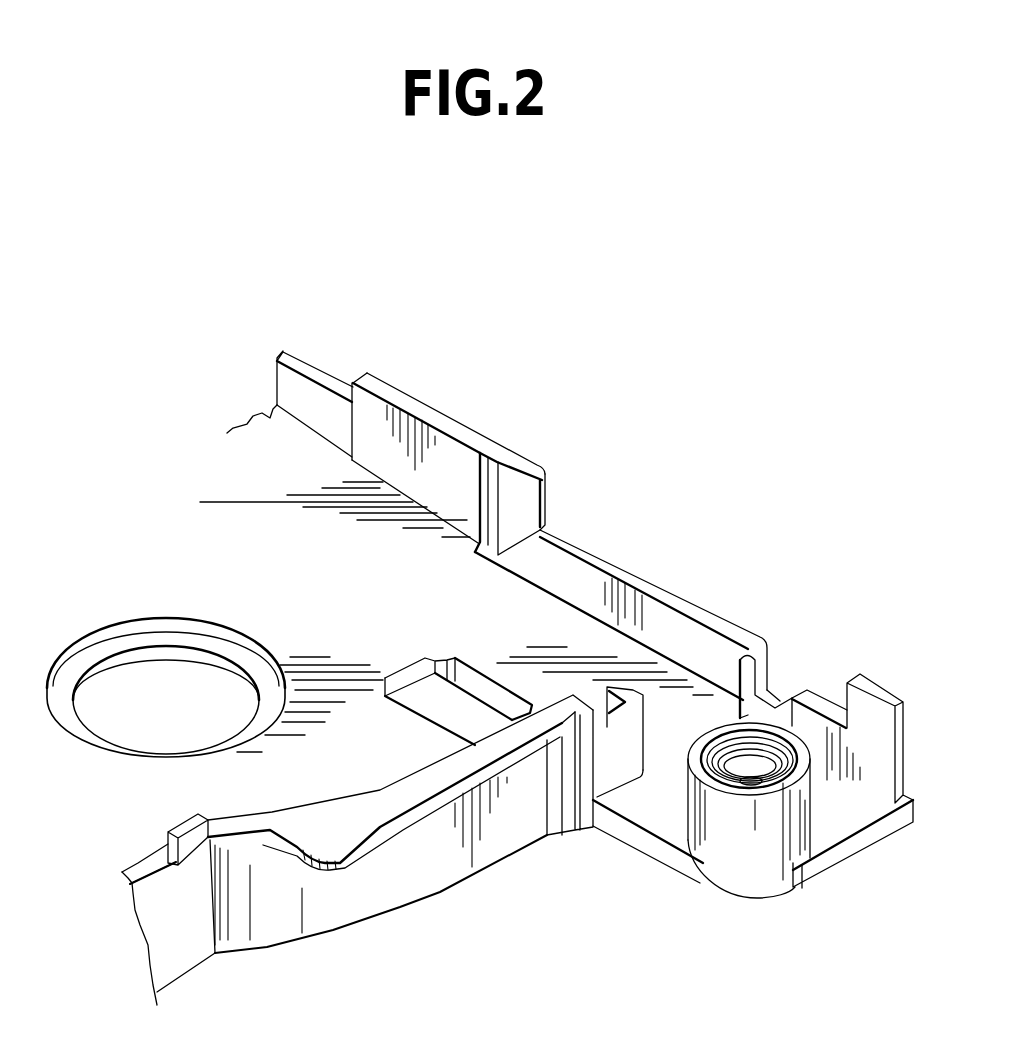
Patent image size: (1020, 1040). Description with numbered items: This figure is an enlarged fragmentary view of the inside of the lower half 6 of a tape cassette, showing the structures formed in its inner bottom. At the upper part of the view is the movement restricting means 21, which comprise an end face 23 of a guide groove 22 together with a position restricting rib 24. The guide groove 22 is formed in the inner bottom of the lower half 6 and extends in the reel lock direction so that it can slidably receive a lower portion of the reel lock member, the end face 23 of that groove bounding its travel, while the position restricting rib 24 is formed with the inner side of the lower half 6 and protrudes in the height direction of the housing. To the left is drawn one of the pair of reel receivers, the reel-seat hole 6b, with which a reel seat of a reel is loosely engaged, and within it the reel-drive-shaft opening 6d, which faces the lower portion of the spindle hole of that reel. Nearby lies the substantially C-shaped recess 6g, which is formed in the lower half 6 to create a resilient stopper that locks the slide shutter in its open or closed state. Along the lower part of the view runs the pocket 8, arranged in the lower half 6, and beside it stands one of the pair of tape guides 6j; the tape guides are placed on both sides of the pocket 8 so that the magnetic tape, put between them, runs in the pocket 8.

The lower half 6 is at (326, 360).
The reel receiver 6b is at (262, 668).
The reel-drive-shaft opening 6d is at (192, 655).
The C-shaped recess 6g is at (457, 705).
The tape guide 6j is at (742, 848).
The pocket 8 is at (532, 862).
The movement restricting means 21 is at (572, 545).
The guide groove 22 is at (553, 590).
The end face 23 is at (500, 562).
The position restricting rib 24 is at (503, 492).